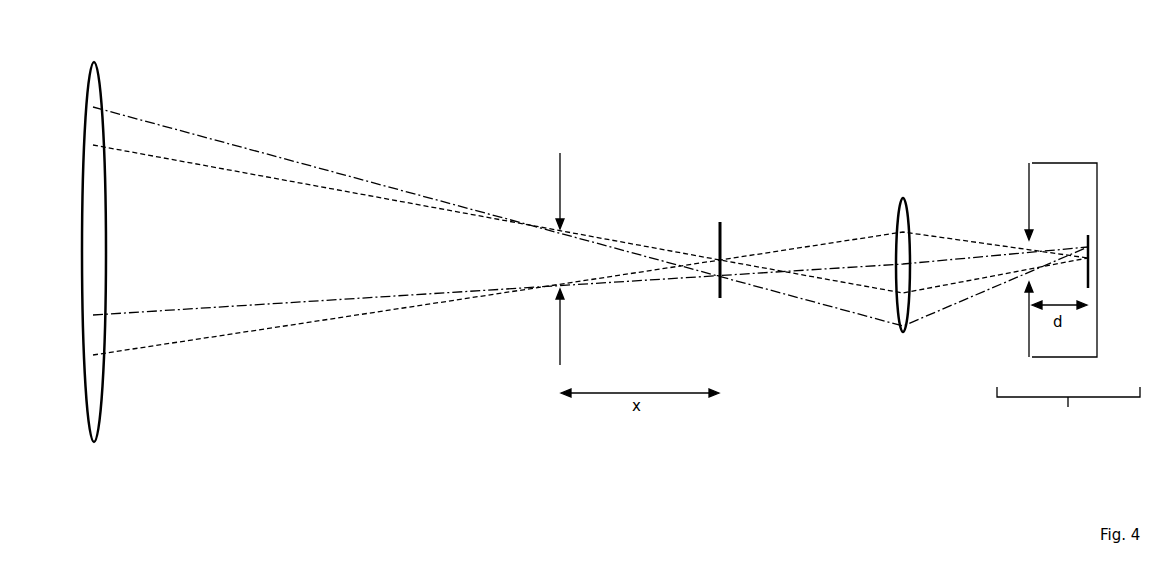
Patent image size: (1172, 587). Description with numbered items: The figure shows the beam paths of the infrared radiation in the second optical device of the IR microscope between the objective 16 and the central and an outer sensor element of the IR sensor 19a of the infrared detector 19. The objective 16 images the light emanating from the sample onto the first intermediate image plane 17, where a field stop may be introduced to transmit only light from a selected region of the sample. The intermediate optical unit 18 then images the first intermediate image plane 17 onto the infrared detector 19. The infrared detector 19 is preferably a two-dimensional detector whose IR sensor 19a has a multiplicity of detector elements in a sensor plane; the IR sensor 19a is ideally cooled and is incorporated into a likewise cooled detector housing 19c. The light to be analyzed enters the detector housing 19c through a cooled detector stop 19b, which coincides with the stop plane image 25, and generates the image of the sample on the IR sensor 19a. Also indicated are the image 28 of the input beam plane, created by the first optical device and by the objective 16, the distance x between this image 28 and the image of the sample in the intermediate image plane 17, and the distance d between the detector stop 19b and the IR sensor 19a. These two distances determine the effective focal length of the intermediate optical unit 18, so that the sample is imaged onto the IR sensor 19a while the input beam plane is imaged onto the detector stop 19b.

The objective 16 is at (94, 242).
The first intermediate image plane 17 is at (720, 242).
The intermediate optical unit 18 is at (903, 254).
The infrared detector 19 is at (1068, 409).
The IR sensor 19a is at (1073, 251).
The detector stop 19b is at (1020, 247).
The detector housing 19c is at (1080, 260).
The stop plane image 25 is at (1020, 247).
The image of the input beam plane 28 is at (559, 246).